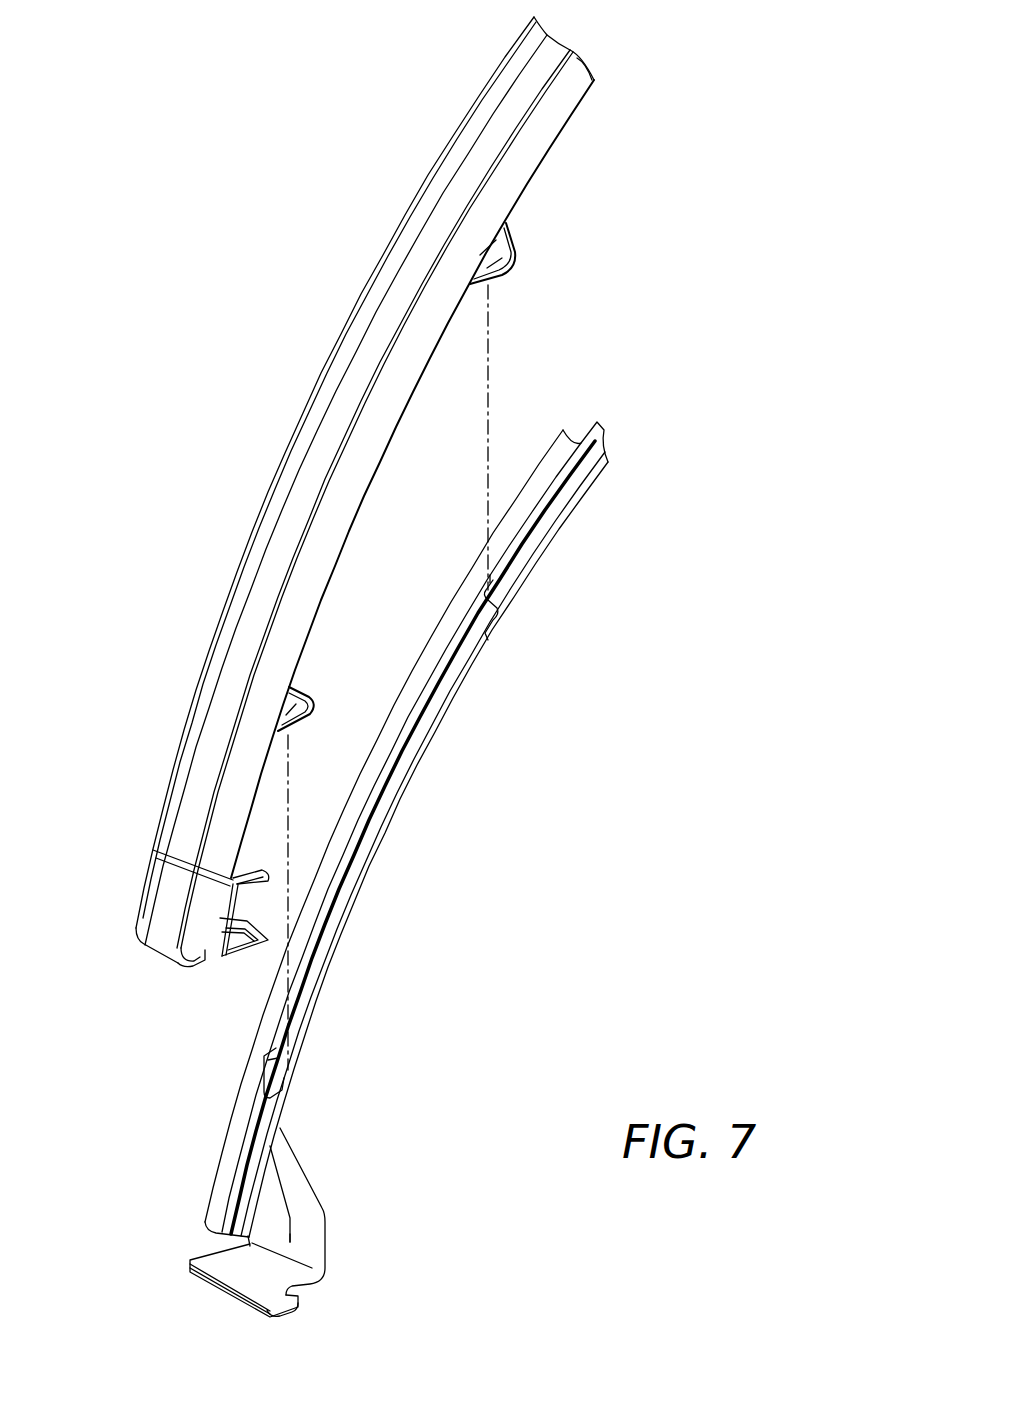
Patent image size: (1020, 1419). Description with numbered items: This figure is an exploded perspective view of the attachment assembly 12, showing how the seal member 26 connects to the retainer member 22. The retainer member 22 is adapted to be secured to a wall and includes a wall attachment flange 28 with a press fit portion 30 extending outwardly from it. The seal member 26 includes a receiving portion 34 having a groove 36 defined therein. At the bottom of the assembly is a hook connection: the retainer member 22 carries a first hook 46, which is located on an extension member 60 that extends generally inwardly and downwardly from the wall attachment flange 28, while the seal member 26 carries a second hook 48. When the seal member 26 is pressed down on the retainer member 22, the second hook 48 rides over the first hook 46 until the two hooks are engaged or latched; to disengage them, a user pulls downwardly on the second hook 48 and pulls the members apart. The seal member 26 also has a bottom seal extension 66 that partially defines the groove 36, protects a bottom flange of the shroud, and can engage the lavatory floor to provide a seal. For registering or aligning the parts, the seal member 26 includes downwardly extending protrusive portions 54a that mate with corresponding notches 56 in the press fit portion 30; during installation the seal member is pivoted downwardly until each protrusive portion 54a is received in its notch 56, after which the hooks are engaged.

The attachment assembly 12 is at (215, 208).
The retainer member 22 is at (618, 408).
The seal member 26 is at (558, 45).
The wall attachment flange 28 is at (222, 1160).
The press fit portion 30 is at (378, 845).
The receiving portion 34 is at (318, 455).
The groove 36 is at (276, 648).
The first hook 46 is at (215, 1277).
The second hook 48 is at (255, 950).
The protrusive portion 54a is at (518, 262).
The notch 56 is at (482, 630).
The extension member 60 is at (320, 1196).
The bottom seal extension 66 is at (200, 965).